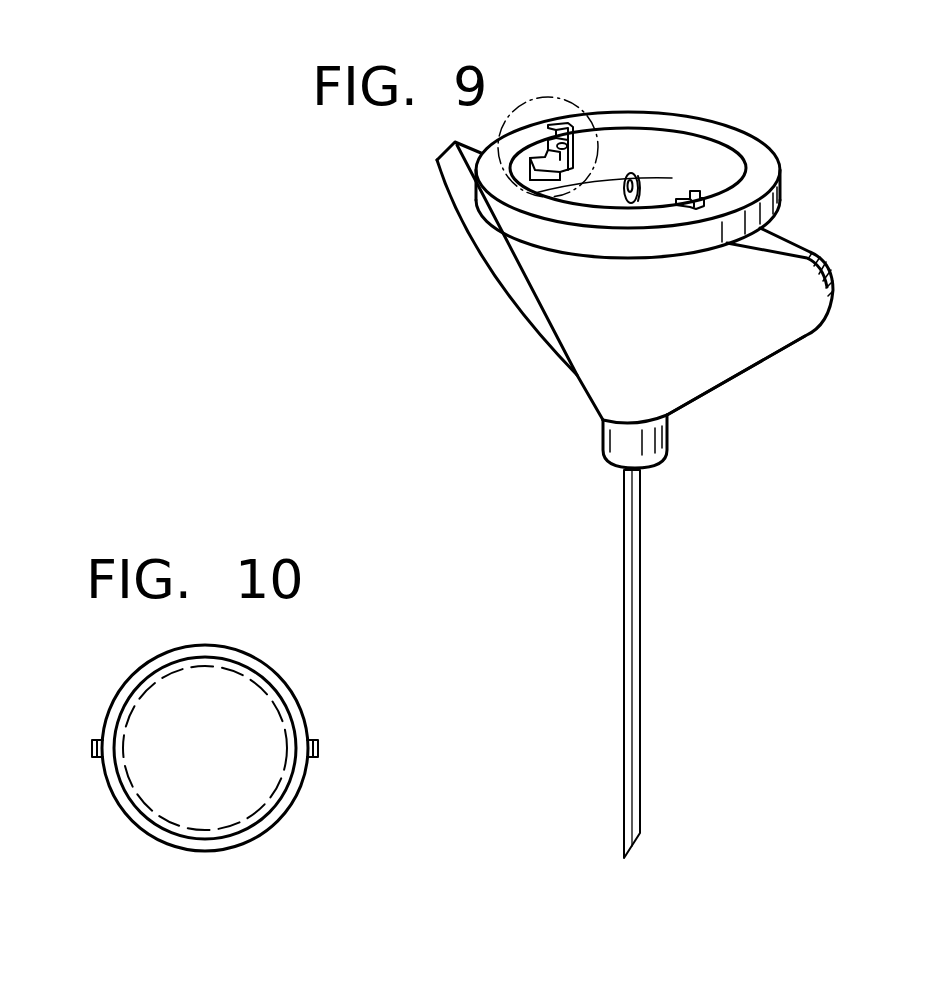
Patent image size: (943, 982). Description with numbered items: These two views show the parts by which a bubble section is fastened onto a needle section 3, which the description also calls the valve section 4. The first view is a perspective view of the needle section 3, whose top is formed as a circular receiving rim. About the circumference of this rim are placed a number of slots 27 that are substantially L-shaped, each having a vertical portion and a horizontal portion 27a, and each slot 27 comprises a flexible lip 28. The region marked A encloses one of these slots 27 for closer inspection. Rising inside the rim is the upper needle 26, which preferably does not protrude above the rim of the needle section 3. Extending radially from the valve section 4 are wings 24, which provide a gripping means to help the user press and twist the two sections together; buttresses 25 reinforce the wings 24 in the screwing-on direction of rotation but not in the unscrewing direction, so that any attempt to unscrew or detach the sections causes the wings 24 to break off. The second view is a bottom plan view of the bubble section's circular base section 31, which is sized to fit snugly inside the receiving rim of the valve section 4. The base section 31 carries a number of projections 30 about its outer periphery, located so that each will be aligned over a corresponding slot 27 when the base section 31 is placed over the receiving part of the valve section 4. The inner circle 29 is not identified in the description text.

In FIG. 9, the needle section 3 is at (603, 352).
In FIG. 9, the valve section 4 is at (632, 660).
In FIG. 9, the wings 24 is at (783, 318).
In FIG. 9, the buttresses 25 is at (707, 357).
In FIG. 9, the upper needle 26 is at (637, 192).
In FIG. 9, the slots 27 is at (558, 122).
In FIG. 9, the horizontal portion 27a is at (532, 190).
In FIG. 9, the flexible lip 28 is at (565, 143).
In FIG. 9, the detail region A is at (567, 97).
In FIG. 10, the opening 29 is at (268, 712).
In FIG. 10, the projections 30 is at (92, 747).
In FIG. 10, the base section 31 is at (130, 820).